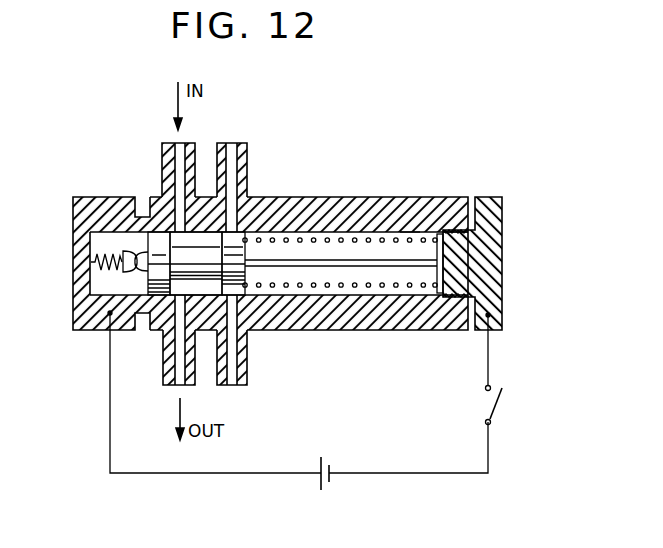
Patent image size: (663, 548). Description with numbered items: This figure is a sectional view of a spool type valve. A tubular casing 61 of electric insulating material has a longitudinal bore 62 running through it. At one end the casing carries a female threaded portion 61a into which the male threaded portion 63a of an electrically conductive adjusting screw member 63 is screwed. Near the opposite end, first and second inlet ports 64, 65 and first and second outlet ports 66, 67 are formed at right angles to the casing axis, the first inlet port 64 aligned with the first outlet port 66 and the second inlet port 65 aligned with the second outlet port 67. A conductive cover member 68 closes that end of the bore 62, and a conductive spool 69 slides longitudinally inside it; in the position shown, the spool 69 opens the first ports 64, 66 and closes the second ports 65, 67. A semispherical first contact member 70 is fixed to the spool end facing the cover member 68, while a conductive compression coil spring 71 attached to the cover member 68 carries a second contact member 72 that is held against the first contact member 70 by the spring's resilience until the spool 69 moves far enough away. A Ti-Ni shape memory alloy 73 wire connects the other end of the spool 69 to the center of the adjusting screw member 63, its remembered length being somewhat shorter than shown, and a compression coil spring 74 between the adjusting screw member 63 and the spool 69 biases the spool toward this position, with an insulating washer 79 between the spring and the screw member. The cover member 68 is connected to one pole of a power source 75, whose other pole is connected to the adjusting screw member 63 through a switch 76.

The casing 61 is at (338, 198).
The female threaded portion 61a is at (462, 240).
The bore 62 is at (390, 245).
The adjusting screw member 63 is at (490, 263).
The male threaded portion 63a is at (447, 297).
The first inlet port 64 is at (175, 143).
The second inlet port 65 is at (232, 143).
The first outlet port 66 is at (178, 387).
The second outlet port 67 is at (233, 387).
The cover member 68 is at (73, 205).
The spool 69 is at (148, 287).
The first contact member 70 is at (142, 257).
The compression coil spring 71 is at (92, 252).
The second contact member 72 is at (112, 253).
The shape memory alloy 73 is at (343, 266).
The compression coil spring 74 is at (408, 232).
The power source 75 is at (328, 485).
The switch 76 is at (499, 404).
The washer 79 is at (445, 283).